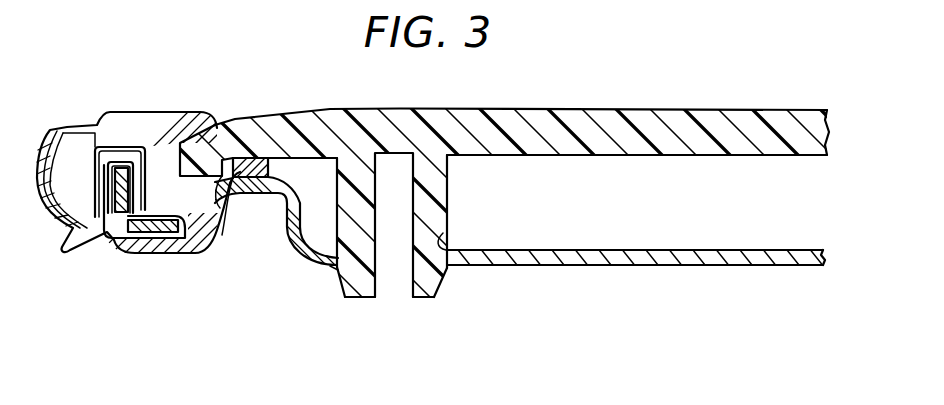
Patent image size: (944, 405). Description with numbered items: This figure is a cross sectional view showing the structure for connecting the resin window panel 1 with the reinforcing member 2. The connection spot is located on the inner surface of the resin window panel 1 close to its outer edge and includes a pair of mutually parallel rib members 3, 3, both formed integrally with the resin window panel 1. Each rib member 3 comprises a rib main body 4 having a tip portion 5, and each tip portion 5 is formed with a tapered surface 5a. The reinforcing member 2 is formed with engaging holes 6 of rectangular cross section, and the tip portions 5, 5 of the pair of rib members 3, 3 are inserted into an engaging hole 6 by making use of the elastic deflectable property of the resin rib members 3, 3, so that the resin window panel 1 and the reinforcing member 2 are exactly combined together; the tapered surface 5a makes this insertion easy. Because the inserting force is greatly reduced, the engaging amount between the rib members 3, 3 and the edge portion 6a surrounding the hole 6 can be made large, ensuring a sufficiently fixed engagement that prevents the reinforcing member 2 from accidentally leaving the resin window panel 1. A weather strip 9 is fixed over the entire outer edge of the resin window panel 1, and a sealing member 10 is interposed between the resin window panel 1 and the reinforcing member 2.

The resin window panel 1 is at (462, 110).
The reinforcing member 2 is at (588, 267).
The rib member 3 is at (357, 300).
The rib main body 4 is at (345, 216).
The tip portion 5 is at (338, 280).
The tapered surface 5a is at (343, 290).
The engaging hole 6 is at (443, 233).
The edge portion 6a is at (337, 270).
The weather strip 9 is at (147, 112).
The sealing member 10 is at (243, 180).